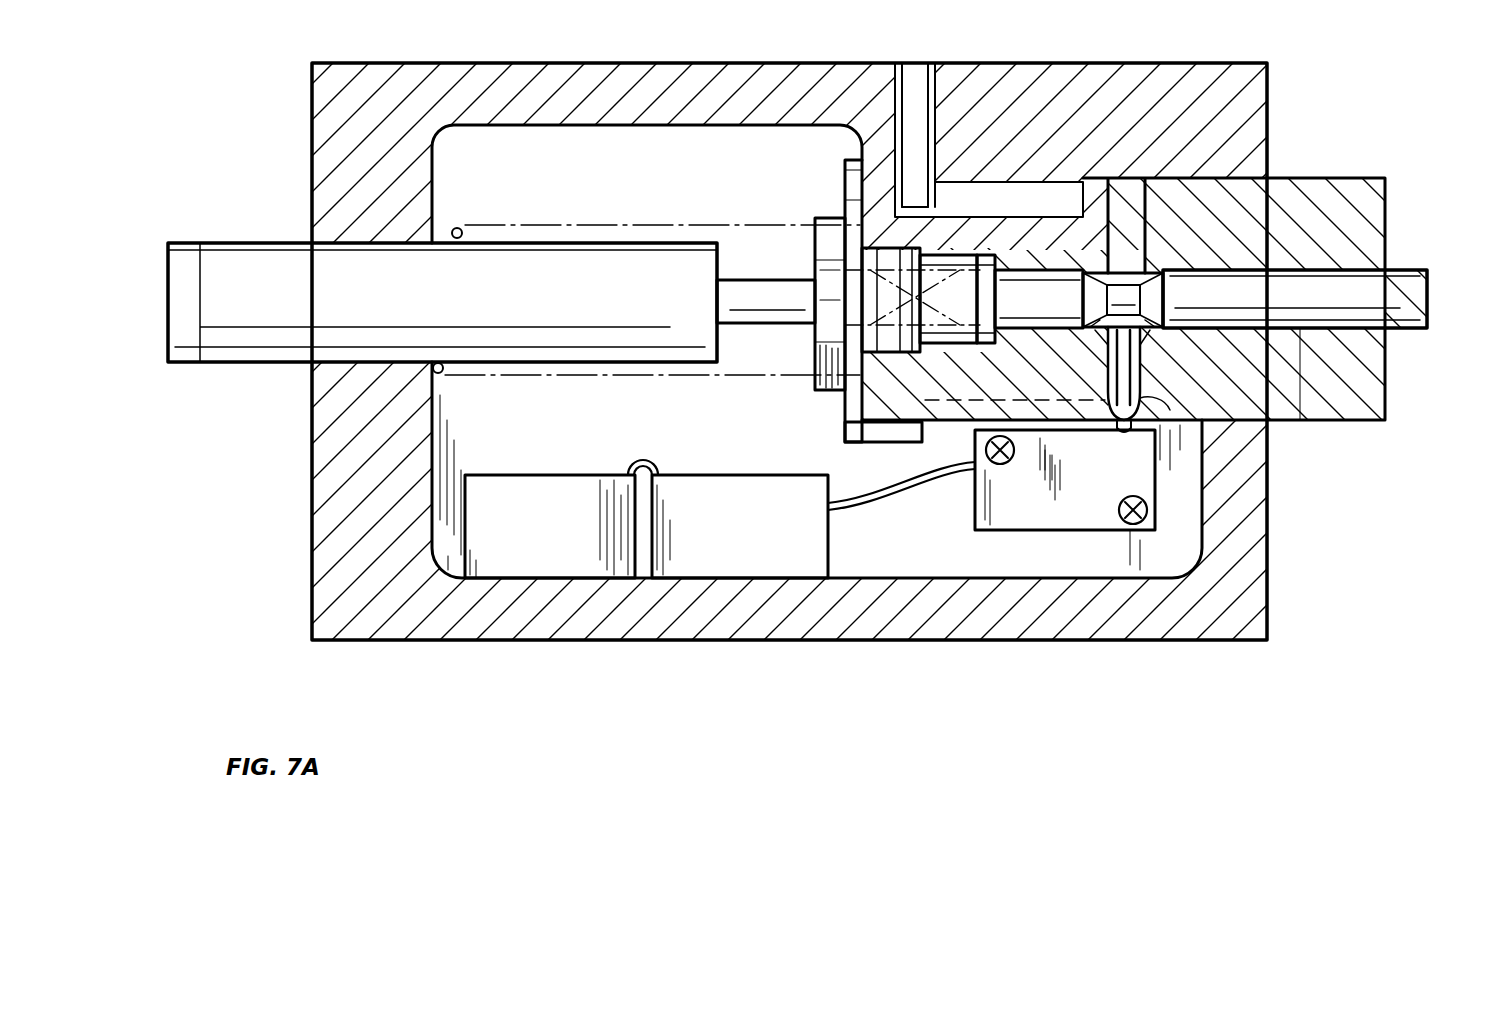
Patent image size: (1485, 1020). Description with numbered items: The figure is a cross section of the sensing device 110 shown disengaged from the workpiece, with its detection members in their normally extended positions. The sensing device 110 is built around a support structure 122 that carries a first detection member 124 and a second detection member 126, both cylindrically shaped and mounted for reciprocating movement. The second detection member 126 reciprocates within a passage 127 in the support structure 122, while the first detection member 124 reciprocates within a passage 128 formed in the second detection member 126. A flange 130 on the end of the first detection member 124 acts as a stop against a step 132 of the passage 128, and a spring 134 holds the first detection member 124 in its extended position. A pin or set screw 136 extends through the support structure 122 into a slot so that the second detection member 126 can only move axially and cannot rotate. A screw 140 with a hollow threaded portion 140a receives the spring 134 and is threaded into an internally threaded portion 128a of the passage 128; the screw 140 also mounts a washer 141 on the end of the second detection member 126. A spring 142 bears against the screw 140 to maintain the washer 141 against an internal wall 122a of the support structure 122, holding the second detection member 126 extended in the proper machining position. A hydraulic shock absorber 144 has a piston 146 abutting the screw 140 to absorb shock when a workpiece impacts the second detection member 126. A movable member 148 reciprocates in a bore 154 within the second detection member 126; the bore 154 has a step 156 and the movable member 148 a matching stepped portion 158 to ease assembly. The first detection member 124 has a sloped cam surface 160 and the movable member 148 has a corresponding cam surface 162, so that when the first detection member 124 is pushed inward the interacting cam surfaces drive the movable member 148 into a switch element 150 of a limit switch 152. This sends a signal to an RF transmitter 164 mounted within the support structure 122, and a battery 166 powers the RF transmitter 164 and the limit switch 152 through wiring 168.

The sensing device 110 is at (602, 668).
The support structure 122 is at (816, 642).
The internal wall 122a is at (845, 430).
The first detection member 124 is at (1408, 272).
The second detection member 126 is at (1348, 178).
The passage 127 is at (1240, 178).
The passage 128 is at (1340, 272).
The internally threaded portion 128a is at (942, 345).
The flange 130 is at (995, 265).
The step 132 is at (999, 306).
The spring 134 is at (950, 248).
The pin or set screw 136 is at (922, 62).
The screw 140 is at (814, 222).
The hollow threaded portion 140a is at (875, 331).
The washer 141 is at (868, 160).
The spring 142 is at (463, 230).
The hydraulic shock absorber 144 is at (252, 242).
The piston 146 is at (790, 326).
The movable member 148 is at (1143, 355).
The switch element 150 is at (1122, 435).
The limit switch 152 is at (1097, 533).
The bore 154 is at (1108, 385).
The step 156 is at (1130, 395).
The stepped portion 158 is at (1269, 374).
The cam surface 160 is at (1095, 346).
The cam surface 162 is at (1165, 300).
The RF transmitter 164 is at (740, 526).
The battery 166 is at (550, 526).
The wiring 168 is at (648, 463).